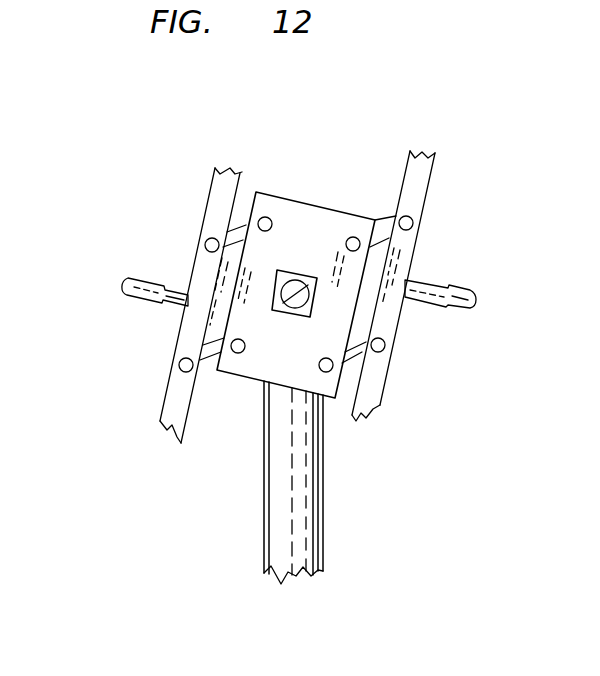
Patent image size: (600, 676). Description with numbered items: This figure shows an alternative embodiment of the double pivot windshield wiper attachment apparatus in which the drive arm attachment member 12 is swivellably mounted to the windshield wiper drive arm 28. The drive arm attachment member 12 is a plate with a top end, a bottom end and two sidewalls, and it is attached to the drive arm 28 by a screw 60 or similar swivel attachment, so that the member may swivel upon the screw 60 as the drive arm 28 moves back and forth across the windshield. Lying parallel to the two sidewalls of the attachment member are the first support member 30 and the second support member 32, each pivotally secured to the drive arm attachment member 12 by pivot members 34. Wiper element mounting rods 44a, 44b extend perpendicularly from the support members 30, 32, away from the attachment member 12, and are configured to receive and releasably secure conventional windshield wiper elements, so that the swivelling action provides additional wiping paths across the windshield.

The drive arm attachment member 12 is at (314, 208).
The windshield wiper drive arm 28 is at (312, 493).
The first support member 30 is at (167, 405).
The second support member 32 is at (375, 388).
The pivot members 34 is at (246, 224).
The first wiper element mounting rod 44a is at (426, 282).
The second wiper element mounting rod 44b is at (122, 280).
The screw 60 is at (301, 275).